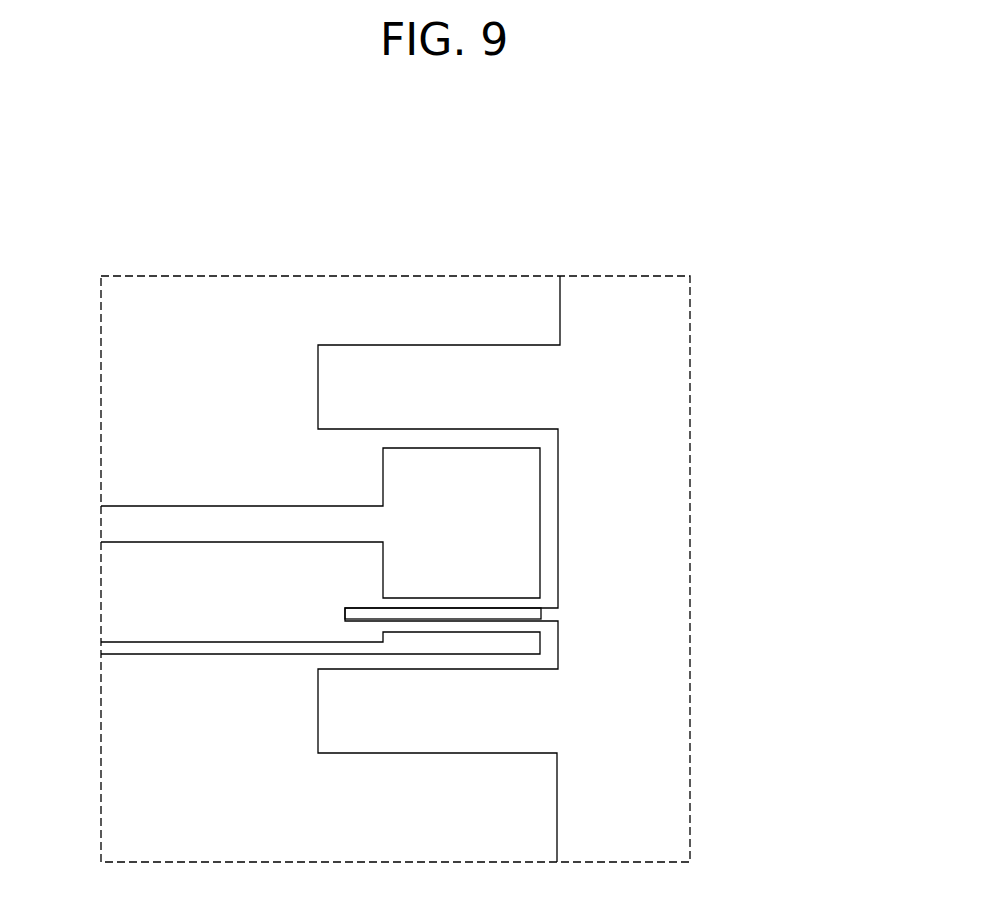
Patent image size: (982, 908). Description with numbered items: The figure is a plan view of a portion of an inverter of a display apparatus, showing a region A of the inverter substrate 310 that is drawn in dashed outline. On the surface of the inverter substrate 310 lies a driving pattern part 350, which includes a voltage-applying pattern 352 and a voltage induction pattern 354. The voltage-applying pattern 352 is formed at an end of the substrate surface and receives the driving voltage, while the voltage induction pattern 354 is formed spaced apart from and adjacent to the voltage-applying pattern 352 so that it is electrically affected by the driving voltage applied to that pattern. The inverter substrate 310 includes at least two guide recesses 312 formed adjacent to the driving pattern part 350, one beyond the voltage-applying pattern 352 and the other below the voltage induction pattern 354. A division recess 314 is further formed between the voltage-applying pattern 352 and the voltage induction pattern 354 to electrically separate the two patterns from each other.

The inverter substrate 310 is at (197, 292).
The region A is at (393, 273).
The guide recesses 312 is at (525, 388).
The driving pattern part 350 is at (446, 585).
The voltage-applying pattern 352 is at (525, 525).
The division recess 314 is at (541, 613).
The voltage induction pattern 354 is at (540, 643).